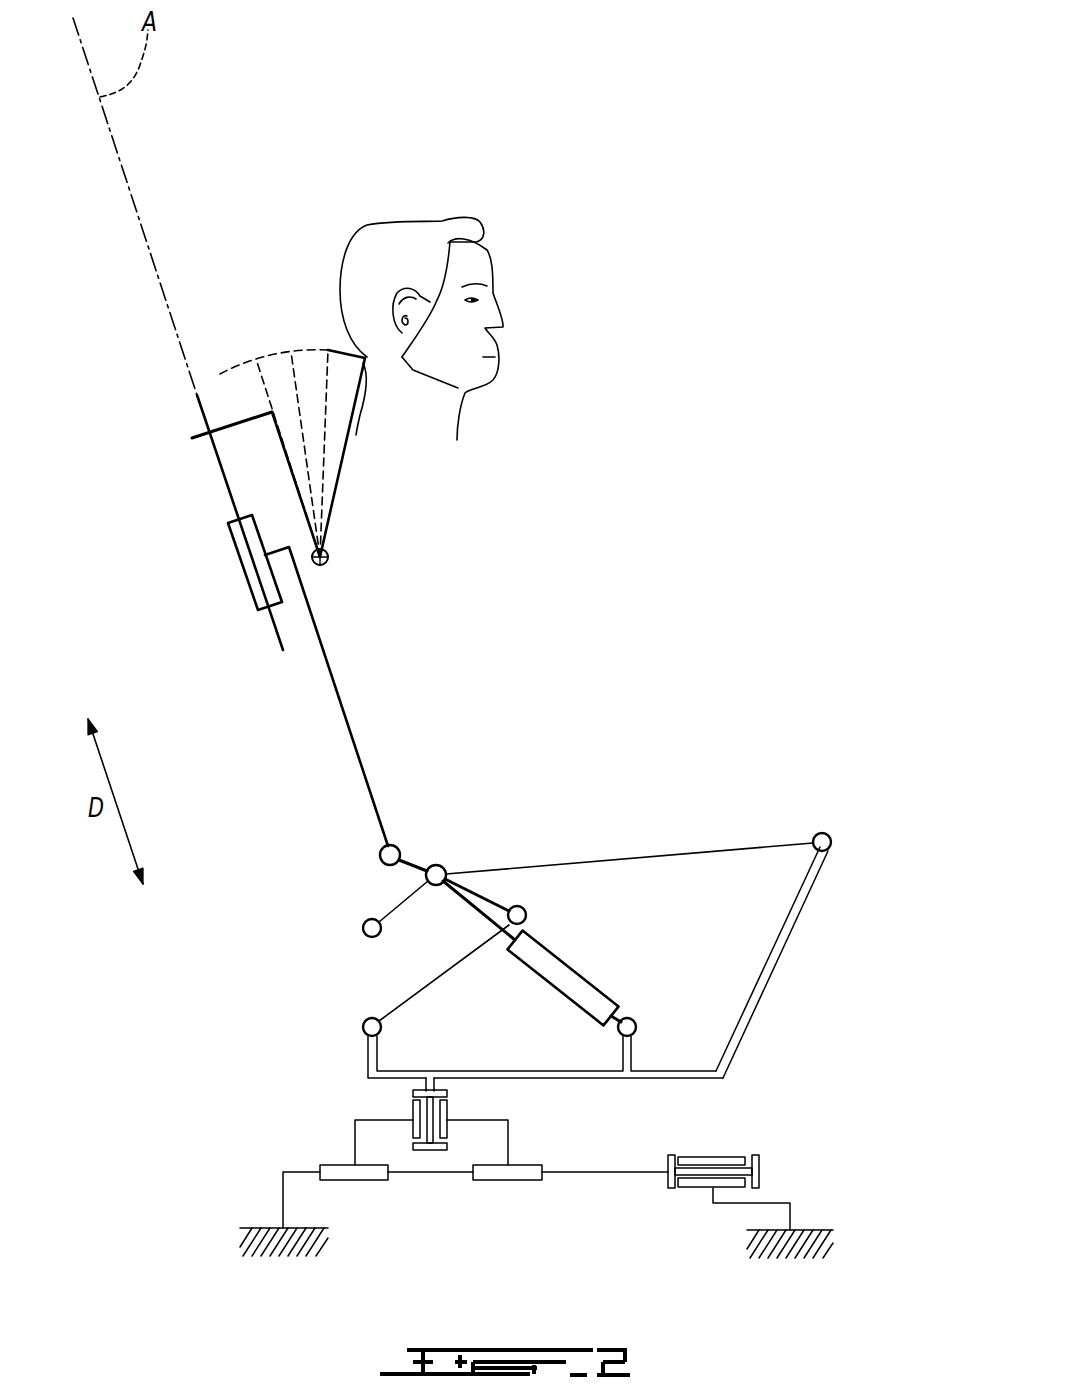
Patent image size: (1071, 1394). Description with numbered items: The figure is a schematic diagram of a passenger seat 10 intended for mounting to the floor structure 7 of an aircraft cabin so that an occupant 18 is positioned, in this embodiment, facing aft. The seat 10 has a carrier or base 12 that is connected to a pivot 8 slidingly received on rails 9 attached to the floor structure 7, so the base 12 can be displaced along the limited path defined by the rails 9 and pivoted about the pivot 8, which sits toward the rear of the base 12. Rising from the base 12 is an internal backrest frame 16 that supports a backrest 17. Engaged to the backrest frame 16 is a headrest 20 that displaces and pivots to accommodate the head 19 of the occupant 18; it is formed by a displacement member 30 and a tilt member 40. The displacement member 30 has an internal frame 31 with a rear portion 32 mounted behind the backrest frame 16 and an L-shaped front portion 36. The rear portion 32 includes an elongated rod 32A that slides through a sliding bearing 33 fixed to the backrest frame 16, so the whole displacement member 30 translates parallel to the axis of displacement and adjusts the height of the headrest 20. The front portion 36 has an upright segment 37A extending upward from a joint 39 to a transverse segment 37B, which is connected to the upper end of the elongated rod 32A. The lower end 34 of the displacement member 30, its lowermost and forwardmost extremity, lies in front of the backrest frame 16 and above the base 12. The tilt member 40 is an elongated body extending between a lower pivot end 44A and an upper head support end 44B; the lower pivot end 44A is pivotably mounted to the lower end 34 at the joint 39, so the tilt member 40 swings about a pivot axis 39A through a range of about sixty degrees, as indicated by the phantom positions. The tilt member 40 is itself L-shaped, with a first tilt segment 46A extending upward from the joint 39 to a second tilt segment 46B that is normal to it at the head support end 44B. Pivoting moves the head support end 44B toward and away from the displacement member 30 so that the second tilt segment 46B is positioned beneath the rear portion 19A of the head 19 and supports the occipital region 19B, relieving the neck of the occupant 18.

The floor structure 7 is at (797, 1243).
The pivot 8 is at (428, 1150).
The rails 9 is at (620, 1172).
The passenger seat 10 is at (822, 779).
The base 12 is at (781, 947).
The backrest frame 16 is at (342, 712).
The backrest 17 is at (377, 766).
The occupant 18 is at (496, 410).
The head 19 is at (466, 217).
The rear portion of the head 19A is at (352, 318).
The occipital region 19B is at (447, 243).
The headrest 20 is at (214, 347).
The displacement member 30 is at (181, 423).
The internal frame 31 is at (211, 514).
The rear portion 32 is at (223, 483).
The elongated rod 32A is at (273, 627).
The sliding bearing 33 is at (257, 567).
The lower end 34 is at (336, 586).
The front portion 36 is at (278, 448).
The upright segment 37A is at (296, 484).
The transverse segment 37B is at (250, 365).
The joint 39 is at (329, 556).
The pivot axis 39A is at (332, 563).
The tilt member 40 is at (364, 502).
The lower pivot end 44A is at (320, 581).
The head support end 44B is at (369, 395).
The first tilt segment 46A is at (345, 457).
The second tilt segment 46B is at (382, 355).